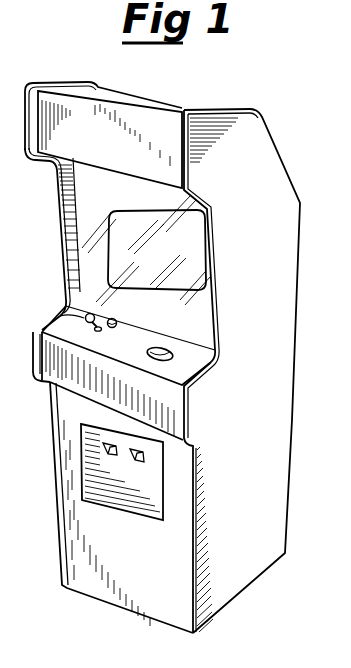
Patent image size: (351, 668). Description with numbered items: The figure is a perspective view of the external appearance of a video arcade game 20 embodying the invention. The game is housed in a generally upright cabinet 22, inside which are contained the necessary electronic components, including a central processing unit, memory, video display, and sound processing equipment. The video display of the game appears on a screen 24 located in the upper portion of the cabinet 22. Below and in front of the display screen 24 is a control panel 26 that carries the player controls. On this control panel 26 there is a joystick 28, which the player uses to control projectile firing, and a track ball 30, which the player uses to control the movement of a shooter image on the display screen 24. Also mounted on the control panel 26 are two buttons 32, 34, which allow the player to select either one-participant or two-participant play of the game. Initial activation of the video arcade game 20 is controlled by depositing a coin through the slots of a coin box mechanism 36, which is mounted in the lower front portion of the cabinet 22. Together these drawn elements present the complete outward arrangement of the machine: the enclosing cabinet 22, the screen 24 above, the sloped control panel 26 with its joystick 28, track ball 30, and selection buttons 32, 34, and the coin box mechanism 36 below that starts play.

The video arcade game 20 is at (169, 362).
The cabinet 22 is at (53, 183).
The screen 24 is at (110, 230).
The control panel 26 is at (97, 345).
The joystick 28 is at (88, 328).
The track ball 30 is at (163, 352).
The button 32 is at (86, 316).
The button 34 is at (110, 319).
The coin box mechanism 36 is at (100, 463).